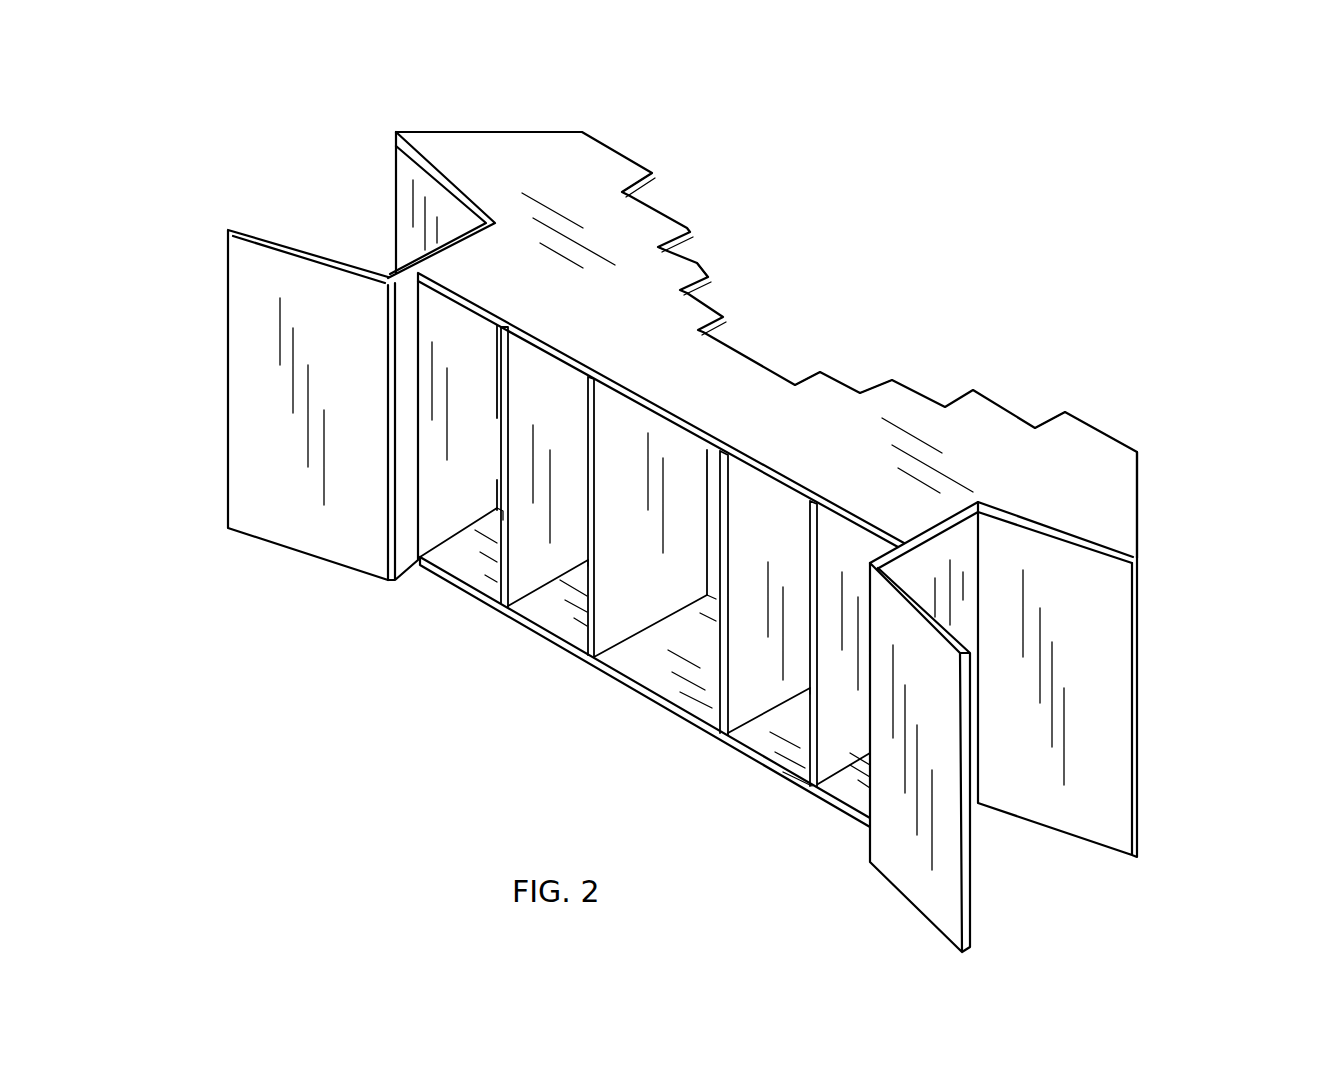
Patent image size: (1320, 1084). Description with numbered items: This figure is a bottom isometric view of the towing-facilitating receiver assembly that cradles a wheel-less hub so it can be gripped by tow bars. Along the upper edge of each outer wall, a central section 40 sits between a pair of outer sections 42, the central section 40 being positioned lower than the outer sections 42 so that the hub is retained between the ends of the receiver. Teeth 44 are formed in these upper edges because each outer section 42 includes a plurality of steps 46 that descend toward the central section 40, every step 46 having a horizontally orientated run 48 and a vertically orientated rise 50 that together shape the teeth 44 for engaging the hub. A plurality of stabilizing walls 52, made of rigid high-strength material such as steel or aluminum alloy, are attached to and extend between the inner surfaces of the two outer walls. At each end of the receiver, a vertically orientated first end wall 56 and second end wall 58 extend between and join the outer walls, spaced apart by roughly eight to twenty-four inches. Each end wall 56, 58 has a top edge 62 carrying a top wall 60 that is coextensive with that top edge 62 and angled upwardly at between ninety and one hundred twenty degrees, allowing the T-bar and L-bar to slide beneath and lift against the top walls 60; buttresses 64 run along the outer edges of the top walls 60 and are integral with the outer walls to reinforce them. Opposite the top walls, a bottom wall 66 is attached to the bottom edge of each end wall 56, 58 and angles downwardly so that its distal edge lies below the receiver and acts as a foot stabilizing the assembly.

The central section 40 is at (793, 343).
The outer section 42 is at (670, 203).
The teeth 44 is at (655, 170).
The step 46 is at (860, 392).
The horizontally orientated run 48 is at (703, 263).
The vertically orientated rise 50 is at (680, 242).
The stabilizing wall 52 is at (523, 552).
The first end wall 56 is at (417, 338).
The second end wall 58 is at (948, 593).
The top wall 60 is at (418, 181).
The top edge 62 is at (978, 538).
The buttress 64 is at (511, 147).
The bottom wall 66 is at (270, 510).